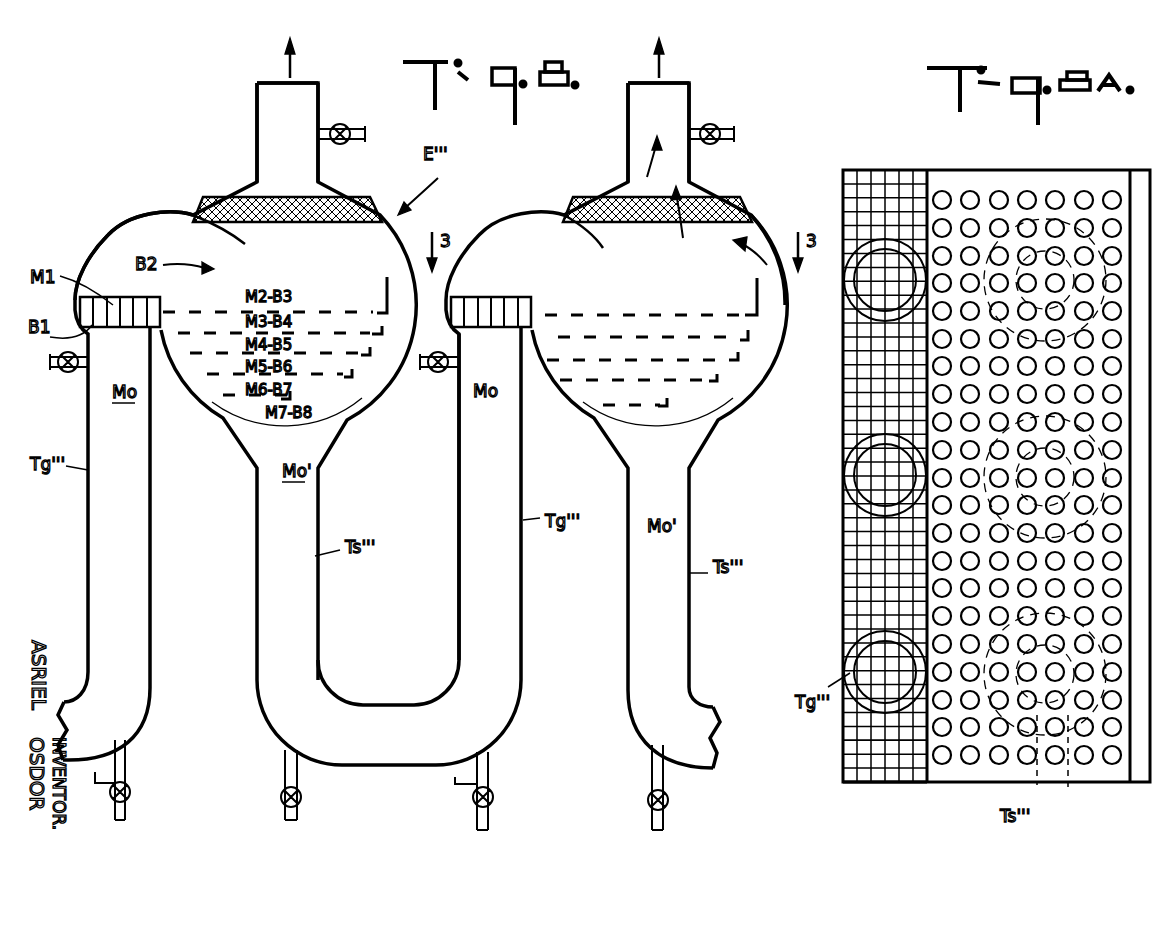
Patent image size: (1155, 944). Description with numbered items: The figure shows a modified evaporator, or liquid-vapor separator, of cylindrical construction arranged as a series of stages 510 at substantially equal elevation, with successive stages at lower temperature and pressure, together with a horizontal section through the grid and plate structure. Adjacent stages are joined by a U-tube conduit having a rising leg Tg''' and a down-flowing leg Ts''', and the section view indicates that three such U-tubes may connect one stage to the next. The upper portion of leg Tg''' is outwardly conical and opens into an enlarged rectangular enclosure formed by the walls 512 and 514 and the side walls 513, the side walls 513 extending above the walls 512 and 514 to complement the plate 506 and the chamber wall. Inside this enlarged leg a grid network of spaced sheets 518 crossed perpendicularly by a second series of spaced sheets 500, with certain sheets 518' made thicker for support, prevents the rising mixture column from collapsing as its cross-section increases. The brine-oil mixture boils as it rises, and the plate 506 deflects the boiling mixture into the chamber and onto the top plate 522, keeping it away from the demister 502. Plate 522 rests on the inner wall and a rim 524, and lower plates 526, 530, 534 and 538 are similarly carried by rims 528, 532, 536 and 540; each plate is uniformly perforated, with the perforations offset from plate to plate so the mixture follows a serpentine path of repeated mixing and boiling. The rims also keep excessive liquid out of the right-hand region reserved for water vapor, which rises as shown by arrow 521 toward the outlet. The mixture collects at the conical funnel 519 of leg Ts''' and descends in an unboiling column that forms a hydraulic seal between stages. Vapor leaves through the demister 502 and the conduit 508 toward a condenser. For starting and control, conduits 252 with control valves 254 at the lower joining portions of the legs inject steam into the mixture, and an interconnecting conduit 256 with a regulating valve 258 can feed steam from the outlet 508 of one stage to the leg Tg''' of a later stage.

In FIG. 8, the conduit 508 is at (708, 101).
In FIG. 8, the interconnecting conduit 256 is at (465, 787).
In FIG. 8, the regulating valve 258 is at (340, 145).
In FIG. 8, the stages 510 is at (373, 247).
In FIG. 8, the side walls 513 is at (127, 218).
In FIG. 8a, the side walls 513 is at (887, 169).
In FIG. 8, the conduits 252 is at (652, 778).
In FIG. 8, the control valves 254 is at (652, 802).
In FIG. 8, the demister 502 is at (733, 208).
In FIG. 8, the arrow 521 is at (767, 230).
In FIG. 8, the plate 506 is at (602, 246).
In FIG. 8, the plate 522 is at (587, 313).
In FIG. 8a, the plate 522 is at (1038, 183).
In FIG. 8, the rim 524 is at (760, 307).
In FIG. 8, the lower plate 526 is at (615, 337).
In FIG. 8, the rim 528 is at (750, 335).
In FIG. 8, the lower plate 530 is at (640, 360).
In FIG. 8, the rim 532 is at (739, 358).
In FIG. 8, the lower plate 534 is at (622, 380).
In FIG. 8, the rim 536 is at (718, 380).
In FIG. 8, the lower plate 538 is at (604, 408).
In FIG. 8, the rim 540 is at (647, 415).
In FIG. 8, the funnel 519 is at (685, 450).
In FIG. 8a, the funnel 519 is at (1067, 767).
In FIG. 8a, the wall 512 is at (842, 555).
In FIG. 8a, the spaced sheets 518 is at (861, 435).
In FIG. 8a, the spaced sheets 500 is at (850, 635).
In FIG. 8a, the sheets of increased thickness 518' is at (861, 750).
In FIG. 8a, the wall 514 is at (927, 780).